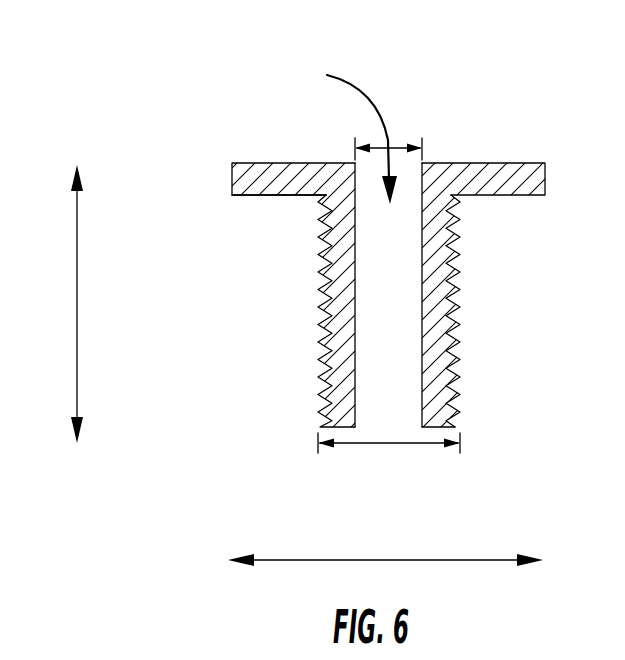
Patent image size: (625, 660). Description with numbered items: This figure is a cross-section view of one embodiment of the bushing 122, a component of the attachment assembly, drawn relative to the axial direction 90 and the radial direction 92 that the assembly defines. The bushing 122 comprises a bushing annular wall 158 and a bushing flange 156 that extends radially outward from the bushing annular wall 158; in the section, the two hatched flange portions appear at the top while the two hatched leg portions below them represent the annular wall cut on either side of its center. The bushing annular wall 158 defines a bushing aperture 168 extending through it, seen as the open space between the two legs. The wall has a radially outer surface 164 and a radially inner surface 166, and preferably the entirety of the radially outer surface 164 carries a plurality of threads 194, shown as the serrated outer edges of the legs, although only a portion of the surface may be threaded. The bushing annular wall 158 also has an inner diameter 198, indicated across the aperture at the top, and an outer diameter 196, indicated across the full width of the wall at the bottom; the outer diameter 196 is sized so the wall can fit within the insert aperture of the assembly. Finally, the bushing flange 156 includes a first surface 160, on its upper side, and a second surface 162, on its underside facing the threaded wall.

The bushing 122 is at (150, 60).
The bushing flange 156 is at (287, 178).
The second surface 162 is at (250, 195).
The radially outer surface 164 is at (457, 350).
The radially inner surface 166 is at (355, 357).
The first surface 160 is at (518, 163).
The plurality of threads 194 is at (455, 272).
The bushing annular wall 158 is at (436, 427).
The bushing aperture 168 is at (392, 146).
The inner diameter 198 is at (340, 134).
The outer diameter 196 is at (354, 443).
The axial direction 90 is at (77, 297).
The radial direction 92 is at (466, 560).